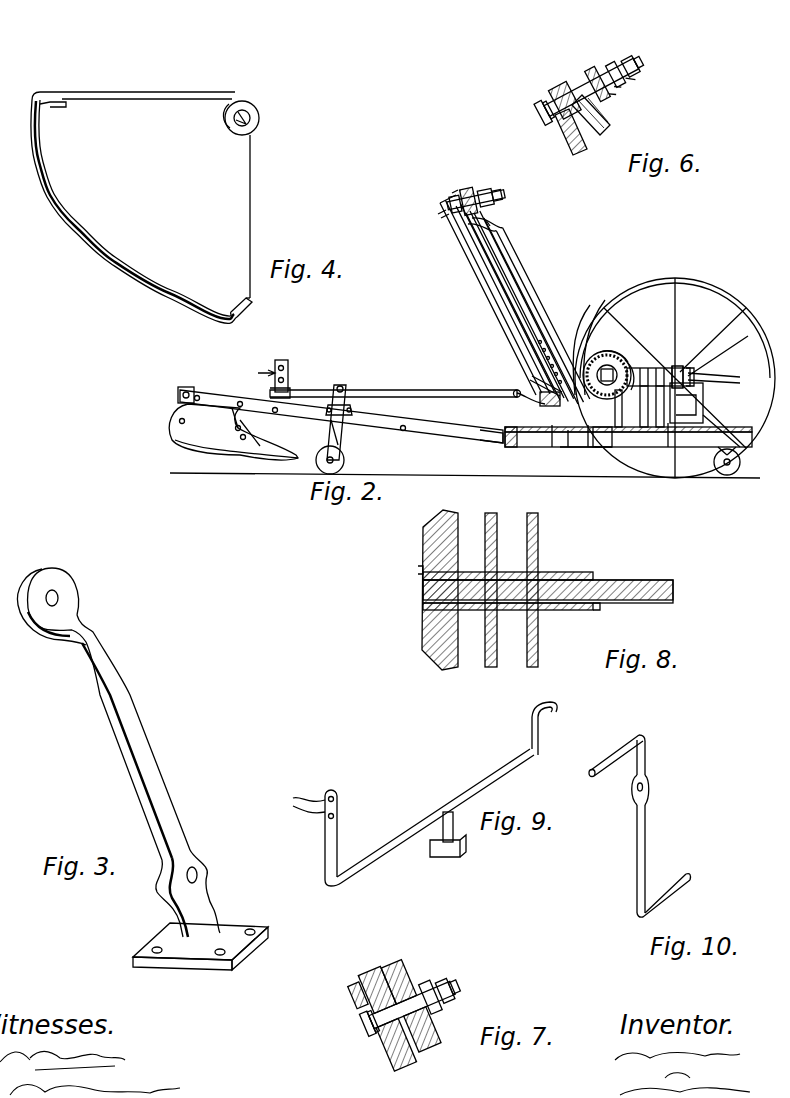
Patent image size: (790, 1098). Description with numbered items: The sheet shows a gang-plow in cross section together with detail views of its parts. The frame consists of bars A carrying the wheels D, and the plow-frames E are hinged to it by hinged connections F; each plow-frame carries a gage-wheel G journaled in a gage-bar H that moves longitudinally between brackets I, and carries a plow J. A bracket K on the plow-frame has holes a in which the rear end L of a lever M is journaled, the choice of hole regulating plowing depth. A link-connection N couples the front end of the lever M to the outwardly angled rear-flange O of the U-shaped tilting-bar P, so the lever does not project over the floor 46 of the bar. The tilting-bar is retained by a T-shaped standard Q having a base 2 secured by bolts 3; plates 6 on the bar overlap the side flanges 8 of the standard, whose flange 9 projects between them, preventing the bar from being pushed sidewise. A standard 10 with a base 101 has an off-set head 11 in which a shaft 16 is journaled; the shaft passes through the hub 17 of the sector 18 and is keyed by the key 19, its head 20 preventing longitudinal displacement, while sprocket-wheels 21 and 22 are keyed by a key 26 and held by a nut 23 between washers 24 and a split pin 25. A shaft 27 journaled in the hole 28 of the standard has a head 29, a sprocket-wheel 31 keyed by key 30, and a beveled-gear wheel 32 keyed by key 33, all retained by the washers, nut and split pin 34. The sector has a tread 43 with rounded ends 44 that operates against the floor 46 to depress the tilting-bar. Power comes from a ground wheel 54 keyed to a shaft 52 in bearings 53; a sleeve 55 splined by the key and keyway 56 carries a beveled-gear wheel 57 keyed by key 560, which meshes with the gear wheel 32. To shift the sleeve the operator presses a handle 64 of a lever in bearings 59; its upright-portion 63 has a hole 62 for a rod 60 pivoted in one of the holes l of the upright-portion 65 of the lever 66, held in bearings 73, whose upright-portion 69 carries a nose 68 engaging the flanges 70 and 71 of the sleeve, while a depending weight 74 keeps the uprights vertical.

In FIG. 2, the base 2 is at (578, 447).
In FIG. 2, the bolts 3 is at (590, 440).
In FIG. 2, the plates 6 is at (575, 345).
In FIG. 2, the side flanges 8 is at (515, 287).
In FIG. 2, the flange 9 is at (520, 273).
In FIG. 6, the standard 10 is at (600, 135).
In FIG. 2, the standard 10 is at (500, 250).
In FIG. 3, the standard 10 is at (148, 765).
In FIG. 7, the standard 10 is at (377, 989).
In FIG. 2, the head 11 is at (452, 196).
In FIG. 3, the head 11 is at (63, 602).
In FIG. 6, the shaft 16 is at (564, 100).
In FIG. 4, the hub 17 is at (258, 117).
In FIG. 6, the hub 17 is at (591, 87).
In FIG. 2, the hub 17 is at (440, 204).
In FIG. 4, the sector 18 is at (141, 195).
In FIG. 6, the sector 18 is at (565, 140).
In FIG. 2, the sector 18 is at (465, 258).
In FIG. 6, the key 19 is at (549, 110).
In FIG. 6, the head of the shaft 20 is at (543, 112).
In FIG. 2, the head of the shaft 20 is at (442, 218).
In FIG. 6, the sprocket-wheel 21 is at (612, 94).
In FIG. 2, the sprocket-wheel 21 is at (455, 204).
In FIG. 6, the sprocket-wheel 22 is at (617, 87).
In FIG. 2, the sprocket-wheel 22 is at (469, 201).
In FIG. 6, the nut 23 is at (631, 78).
In FIG. 2, the nut 23 is at (500, 198).
In FIG. 6, the washers 24 is at (616, 74).
In FIG. 6, the split pin 25 is at (633, 65).
In FIG. 6, the key 26 is at (598, 83).
In FIG. 7, the shaft 27 is at (422, 1029).
In FIG. 3, the hole 28 is at (197, 872).
In FIG. 7, the hole 28 is at (396, 1044).
In FIG. 7, the head 29 is at (367, 1023).
In FIG. 7, the key 30 is at (373, 1022).
In FIG. 2, the sprocket-wheel 31 is at (590, 330).
In FIG. 7, the sprocket-wheel 31 is at (358, 995).
In FIG. 2, the beveled-gear wheel 32 is at (615, 345).
In FIG. 7, the beveled-gear wheel 32 is at (398, 982).
In FIG. 7, the key 33 is at (431, 997).
In FIG. 2, the washers, nut and split pin 34 is at (610, 365).
In FIG. 7, the washers, nut and split pin 34 is at (448, 989).
In FIG. 4, the tread 43 is at (76, 214).
In FIG. 2, the tread 43 is at (478, 272).
In FIG. 4, the rounded ends 44 is at (55, 96).
In FIG. 2, the rounded ends 44 is at (530, 380).
In FIG. 2, the floor 46 is at (552, 447).
In FIG. 2, the shaft 52 is at (670, 365).
In FIG. 8, the shaft 52 is at (635, 580).
In FIG. 2, the bearings 53 is at (700, 370).
In FIG. 2, the wheel 54 is at (678, 278).
In FIG. 8, the sleeve 55 is at (570, 572).
In FIG. 8, the key and keyway 56 is at (597, 608).
In FIG. 2, the beveled-gear wheel 57 is at (630, 360).
In FIG. 8, the beveled-gear wheel 57 is at (430, 622).
In FIG. 8, the key 560 is at (418, 566).
In FIG. 10, the bearings 59 is at (665, 895).
In FIG. 2, the rod 60 is at (703, 395).
In FIG. 10, the hole 62 is at (650, 786).
In FIG. 10, the upright-portion 63 is at (646, 832).
In FIG. 10, the handle 64 is at (612, 758).
In FIG. 2, the upright-portion 65 is at (700, 415).
In FIG. 9, the upright-portion 65 is at (338, 803).
In FIG. 2, the lever 66 is at (680, 447).
In FIG. 9, the lever 66 is at (405, 832).
In FIG. 9, the nose 68 is at (548, 703).
In FIG. 2, the upright-portion 69 is at (614, 408).
In FIG. 9, the upright-portion 69 is at (532, 733).
In FIG. 2, the flange 70 is at (690, 362).
In FIG. 8, the flange 70 is at (536, 540).
In FIG. 2, the flange 71 is at (680, 362).
In FIG. 8, the flange 71 is at (491, 540).
In FIG. 2, the bearings 73 is at (648, 447).
In FIG. 9, the depending weight 74 is at (447, 857).
In FIG. 2, the bases 101 is at (602, 447).
In FIG. 3, the bases 101 is at (237, 928).
In FIG. 2, the bars A is at (645, 450).
In FIG. 2, the wheels D is at (727, 476).
In FIG. 2, the plow-frames E is at (426, 440).
In FIG. 2, the hinged connections F is at (492, 445).
In FIG. 2, the gage-wheel G is at (348, 455).
In FIG. 2, the gage-bar H is at (330, 437).
In FIG. 2, the brackets I is at (350, 392).
In FIG. 2, the plows J is at (233, 432).
In FIG. 2, the bracket K is at (287, 362).
In FIG. 2, the rear end L is at (294, 390).
In FIG. 2, the lever M is at (437, 392).
In FIG. 2, the link-connection N is at (520, 400).
In FIG. 2, the rear-flange O is at (545, 403).
In FIG. 2, the tilting-bar P is at (572, 437).
In FIG. 2, the standard Q is at (510, 265).
In FIG. 2, the holes a is at (259, 373).
In FIG. 9, the holes l is at (304, 803).